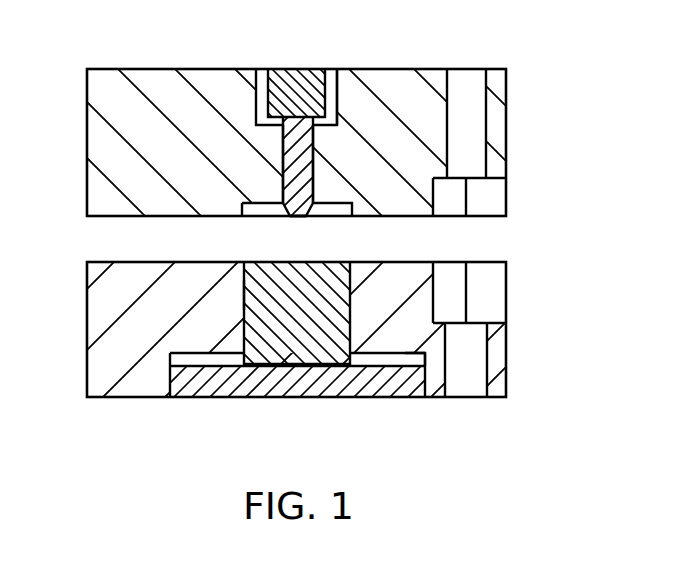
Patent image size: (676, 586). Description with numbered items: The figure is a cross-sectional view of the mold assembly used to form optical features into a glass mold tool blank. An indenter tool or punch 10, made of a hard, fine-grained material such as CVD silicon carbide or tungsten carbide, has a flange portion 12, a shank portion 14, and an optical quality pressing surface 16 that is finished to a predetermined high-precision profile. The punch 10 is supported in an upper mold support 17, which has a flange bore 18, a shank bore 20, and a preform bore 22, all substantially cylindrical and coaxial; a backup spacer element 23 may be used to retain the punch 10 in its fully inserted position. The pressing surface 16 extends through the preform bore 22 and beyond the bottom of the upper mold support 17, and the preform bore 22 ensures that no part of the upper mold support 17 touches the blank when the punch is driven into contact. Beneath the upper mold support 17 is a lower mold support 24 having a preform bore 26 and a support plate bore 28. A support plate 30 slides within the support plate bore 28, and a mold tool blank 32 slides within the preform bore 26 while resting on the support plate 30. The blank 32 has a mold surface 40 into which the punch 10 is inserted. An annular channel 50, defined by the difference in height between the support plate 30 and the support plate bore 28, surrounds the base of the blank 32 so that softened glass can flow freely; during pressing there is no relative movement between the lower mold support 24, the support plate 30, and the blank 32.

The indenter tool or punch 10 is at (287, 147).
The flange portion 12 is at (340, 118).
The shank portion 14 is at (313, 172).
The optical quality pressing surface 16 is at (310, 217).
The upper mold support 17 is at (507, 119).
The flange bore 18 is at (336, 90).
The shank bore 20 is at (282, 173).
The preform bore 22 is at (345, 216).
The backup spacer element 23 is at (309, 68).
The lower mold support 24 is at (97, 333).
The preform bore 26 is at (246, 292).
The support plate bore 28 is at (407, 368).
The support plate 30 is at (225, 383).
The mold tool blank 32 is at (260, 262).
The mold surface 40 is at (290, 262).
The annular channel 50 is at (198, 357).